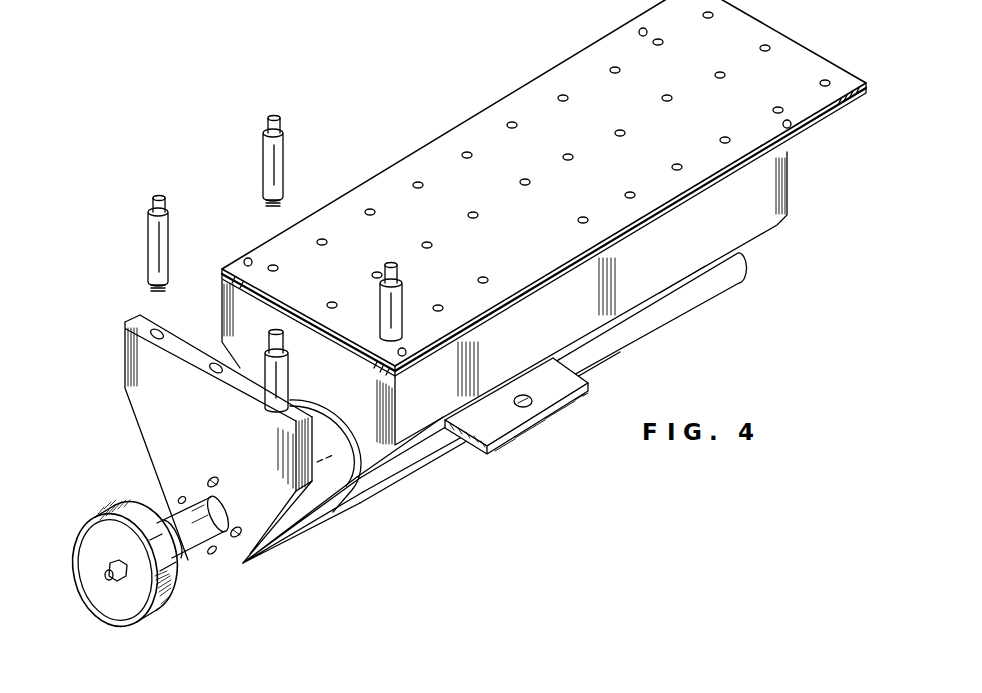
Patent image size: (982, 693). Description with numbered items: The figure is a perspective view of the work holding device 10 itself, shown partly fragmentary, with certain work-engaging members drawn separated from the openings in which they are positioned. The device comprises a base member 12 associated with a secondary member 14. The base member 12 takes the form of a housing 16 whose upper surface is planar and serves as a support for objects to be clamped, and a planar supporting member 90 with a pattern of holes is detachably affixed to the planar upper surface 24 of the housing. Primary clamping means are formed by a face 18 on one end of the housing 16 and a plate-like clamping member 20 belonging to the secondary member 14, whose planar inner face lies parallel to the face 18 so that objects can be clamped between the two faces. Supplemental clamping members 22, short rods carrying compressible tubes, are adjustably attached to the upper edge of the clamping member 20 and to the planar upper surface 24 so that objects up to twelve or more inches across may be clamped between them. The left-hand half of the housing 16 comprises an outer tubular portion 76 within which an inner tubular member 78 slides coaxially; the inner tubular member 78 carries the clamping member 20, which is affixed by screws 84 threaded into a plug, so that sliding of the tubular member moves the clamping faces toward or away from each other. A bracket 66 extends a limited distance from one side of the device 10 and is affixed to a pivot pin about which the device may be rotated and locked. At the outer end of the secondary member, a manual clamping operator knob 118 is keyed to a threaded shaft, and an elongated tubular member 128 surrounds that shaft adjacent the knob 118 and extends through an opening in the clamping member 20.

The work holding device 10 is at (439, 92).
The base member 12 is at (822, 201).
The secondary member 14 is at (135, 440).
The housing 16 is at (662, 277).
The face 18 is at (367, 442).
The clamping member 20 is at (265, 492).
The supplemental clamping members 22 is at (282, 160).
The planar upper surface 24 is at (673, 221).
The bracket 66 is at (494, 428).
The outer tubular portion 76 is at (408, 457).
The inner tubular member 78 is at (315, 502).
The screws 84 is at (213, 477).
The planar supporting member 90 is at (585, 203).
The manual clamping operator knob 118 is at (128, 613).
The elongated tubular member 128 is at (185, 540).